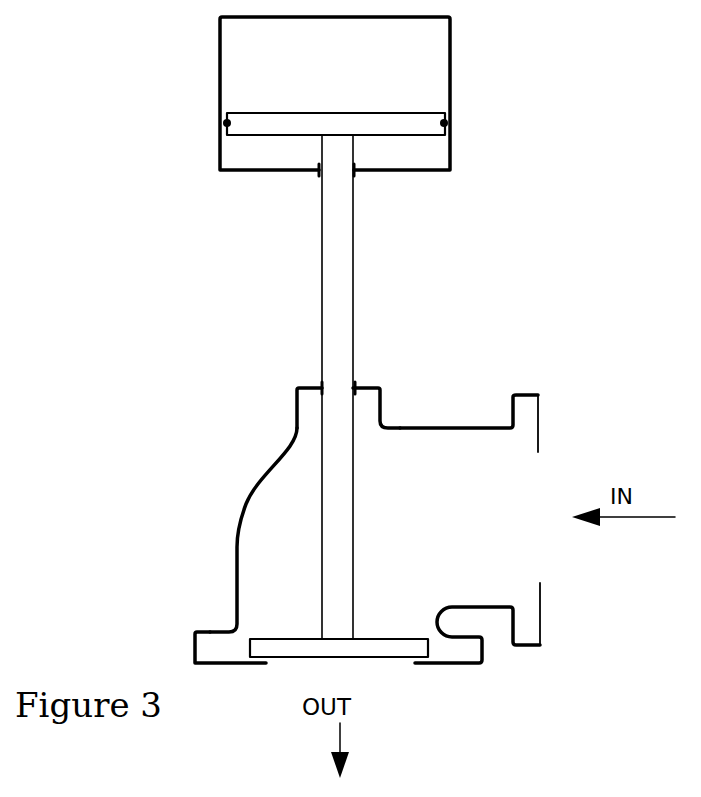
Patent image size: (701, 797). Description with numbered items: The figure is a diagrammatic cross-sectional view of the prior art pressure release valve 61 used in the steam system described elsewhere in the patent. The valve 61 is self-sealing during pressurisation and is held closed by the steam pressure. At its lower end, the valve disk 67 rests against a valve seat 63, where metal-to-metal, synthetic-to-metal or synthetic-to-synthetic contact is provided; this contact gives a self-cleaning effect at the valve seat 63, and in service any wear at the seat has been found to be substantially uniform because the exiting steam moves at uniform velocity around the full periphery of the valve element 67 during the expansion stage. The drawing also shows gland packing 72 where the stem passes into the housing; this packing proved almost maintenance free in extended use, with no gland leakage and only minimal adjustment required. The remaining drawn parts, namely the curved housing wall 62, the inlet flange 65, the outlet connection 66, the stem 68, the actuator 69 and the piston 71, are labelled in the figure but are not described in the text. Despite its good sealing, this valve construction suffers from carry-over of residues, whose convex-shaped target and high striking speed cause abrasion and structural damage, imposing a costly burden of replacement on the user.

The valve 61 is at (246, 416).
The curved housing wall 62 is at (250, 487).
The valve seat 63 is at (266, 665).
The inlet connection flange 65 is at (543, 449).
The outlet connection 66 is at (427, 667).
The valve disk 67 is at (380, 642).
The valve stem 68 is at (350, 512).
The actuator 69 is at (452, 75).
The piston 71 is at (393, 125).
The gland packing 72 is at (358, 385).